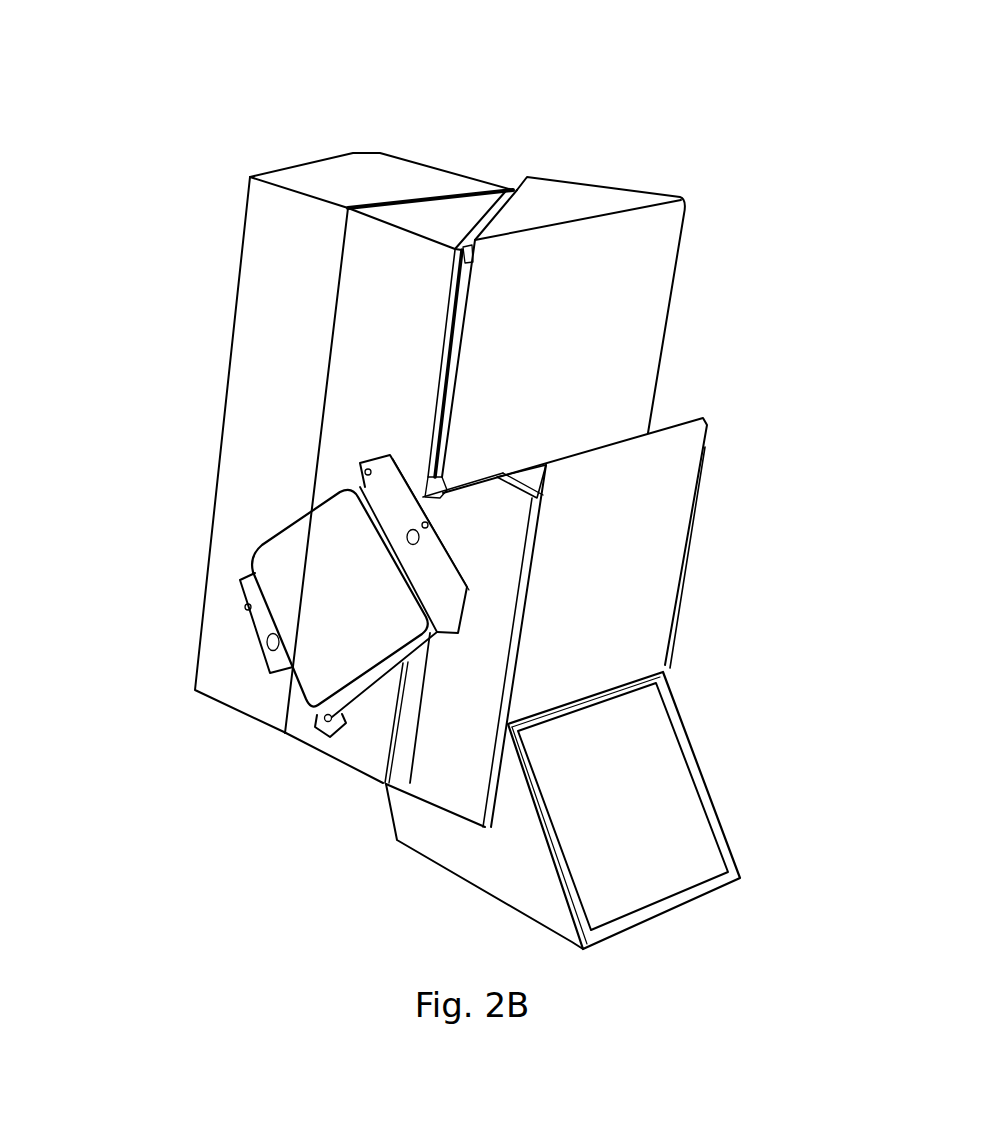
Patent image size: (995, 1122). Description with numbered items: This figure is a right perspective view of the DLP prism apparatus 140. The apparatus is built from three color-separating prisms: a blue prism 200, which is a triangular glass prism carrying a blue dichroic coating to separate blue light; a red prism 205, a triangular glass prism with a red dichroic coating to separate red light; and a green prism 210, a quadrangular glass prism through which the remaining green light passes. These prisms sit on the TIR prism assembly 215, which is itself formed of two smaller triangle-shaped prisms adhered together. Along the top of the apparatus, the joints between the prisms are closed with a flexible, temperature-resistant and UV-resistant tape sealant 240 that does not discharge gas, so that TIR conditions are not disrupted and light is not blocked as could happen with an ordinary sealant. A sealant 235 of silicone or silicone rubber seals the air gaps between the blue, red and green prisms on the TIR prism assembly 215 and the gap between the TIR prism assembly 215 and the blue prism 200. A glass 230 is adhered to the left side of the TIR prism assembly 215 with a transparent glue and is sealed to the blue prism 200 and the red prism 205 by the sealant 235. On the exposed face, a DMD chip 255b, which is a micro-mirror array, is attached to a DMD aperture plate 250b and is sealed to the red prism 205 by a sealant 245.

The DLP prism apparatus 140 is at (181, 76).
The green prism 210 is at (300, 175).
The red prism 205 is at (420, 217).
The blue prism 200 is at (575, 190).
The tape sealant 240 is at (380, 208).
The sealant 235 is at (720, 830).
The TIR prism assembly 215 is at (727, 410).
The glass 230 is at (440, 750).
The sealant 245 is at (438, 637).
The DMD aperture plate 250b is at (243, 602).
The DMD chip 255b is at (327, 640).